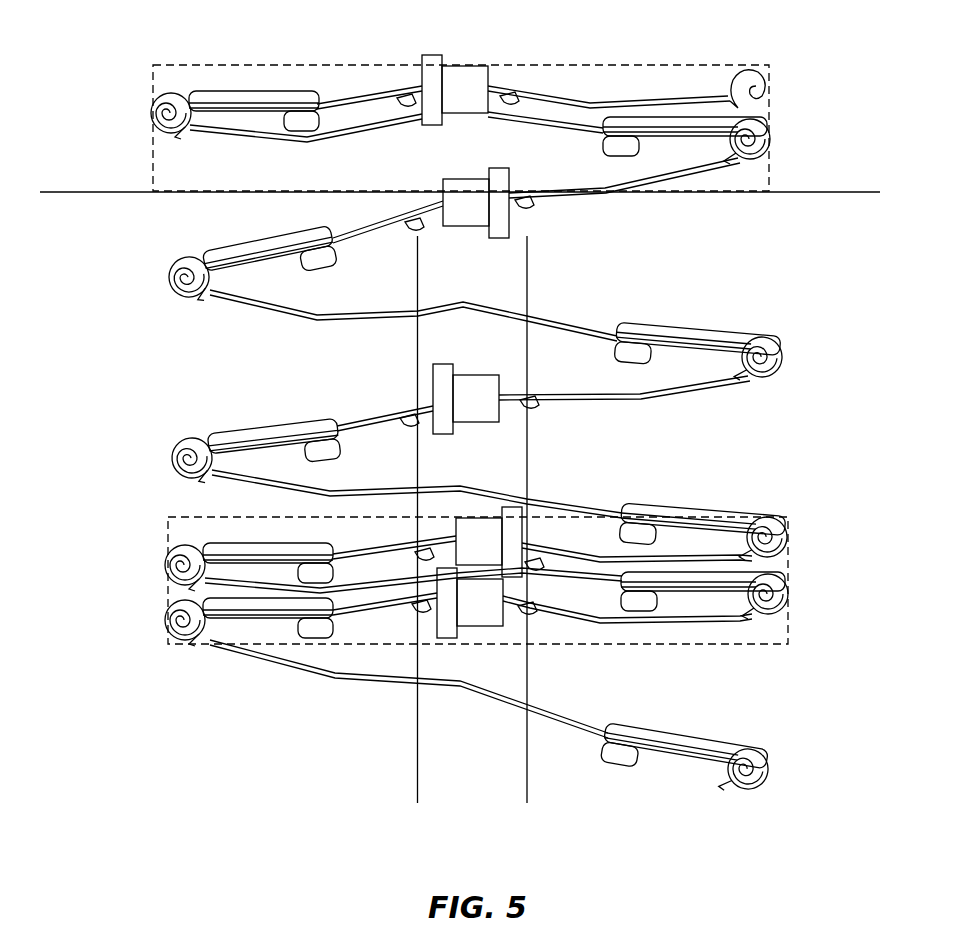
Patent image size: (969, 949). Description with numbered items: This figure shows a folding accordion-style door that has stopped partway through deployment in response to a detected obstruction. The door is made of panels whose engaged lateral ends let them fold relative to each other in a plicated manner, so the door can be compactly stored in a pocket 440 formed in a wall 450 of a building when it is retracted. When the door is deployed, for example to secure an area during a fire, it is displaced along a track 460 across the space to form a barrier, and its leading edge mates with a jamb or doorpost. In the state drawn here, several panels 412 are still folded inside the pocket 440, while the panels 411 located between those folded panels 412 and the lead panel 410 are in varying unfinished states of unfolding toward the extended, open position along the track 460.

The lead panel 410 is at (562, 726).
The panels 411 is at (142, 246).
The panels 412 is at (150, 84).
The pocket 440 is at (648, 64).
The wall 450 is at (101, 106).
The track 460 is at (526, 450).